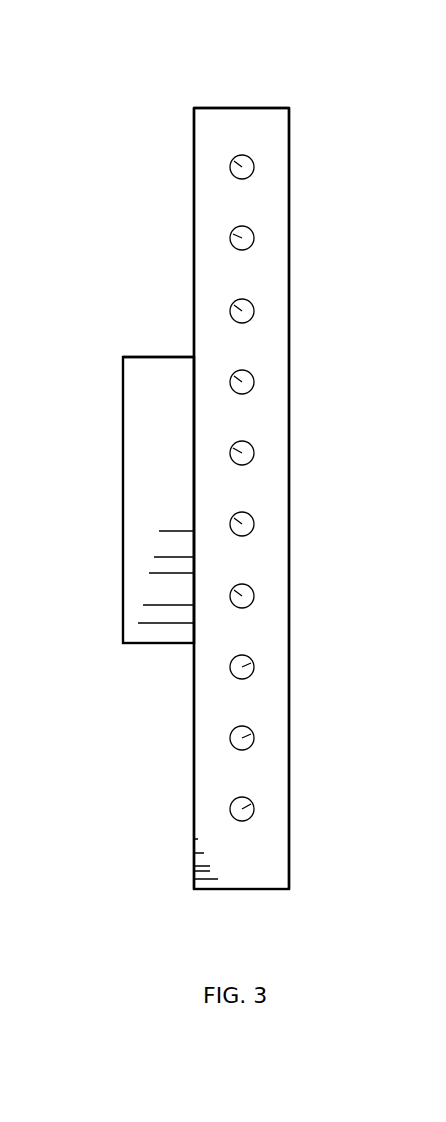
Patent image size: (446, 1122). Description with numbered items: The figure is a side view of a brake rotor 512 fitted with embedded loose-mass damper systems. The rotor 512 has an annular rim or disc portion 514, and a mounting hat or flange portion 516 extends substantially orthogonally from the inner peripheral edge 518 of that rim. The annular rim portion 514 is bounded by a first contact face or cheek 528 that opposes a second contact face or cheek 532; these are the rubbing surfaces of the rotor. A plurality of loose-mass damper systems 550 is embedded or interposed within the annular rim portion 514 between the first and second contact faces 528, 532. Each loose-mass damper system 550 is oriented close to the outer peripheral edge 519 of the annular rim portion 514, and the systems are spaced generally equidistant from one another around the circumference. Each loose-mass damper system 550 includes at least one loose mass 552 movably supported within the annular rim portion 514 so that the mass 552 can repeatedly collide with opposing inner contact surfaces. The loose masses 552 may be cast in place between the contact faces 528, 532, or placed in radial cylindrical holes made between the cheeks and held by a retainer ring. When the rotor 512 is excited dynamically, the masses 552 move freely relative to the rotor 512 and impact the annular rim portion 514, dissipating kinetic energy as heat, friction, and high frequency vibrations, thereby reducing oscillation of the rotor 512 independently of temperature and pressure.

The brake rotor 512 is at (120, 103).
The annular rim portion 514 is at (241, 91).
The outer peripheral edge 519 is at (212, 108).
The mounting hat portion 516 is at (123, 357).
The inner peripheral edge 518 is at (194, 357).
The first contact face 528 is at (191, 158).
The second contact face 532 is at (292, 158).
The loose-mass damper system 550 is at (266, 171).
The loose mass 552 is at (234, 161).